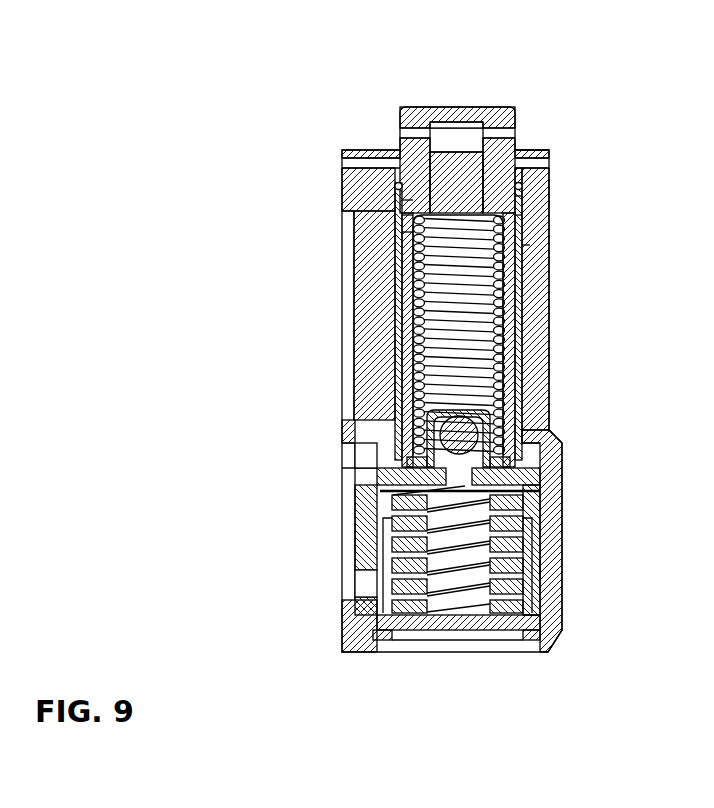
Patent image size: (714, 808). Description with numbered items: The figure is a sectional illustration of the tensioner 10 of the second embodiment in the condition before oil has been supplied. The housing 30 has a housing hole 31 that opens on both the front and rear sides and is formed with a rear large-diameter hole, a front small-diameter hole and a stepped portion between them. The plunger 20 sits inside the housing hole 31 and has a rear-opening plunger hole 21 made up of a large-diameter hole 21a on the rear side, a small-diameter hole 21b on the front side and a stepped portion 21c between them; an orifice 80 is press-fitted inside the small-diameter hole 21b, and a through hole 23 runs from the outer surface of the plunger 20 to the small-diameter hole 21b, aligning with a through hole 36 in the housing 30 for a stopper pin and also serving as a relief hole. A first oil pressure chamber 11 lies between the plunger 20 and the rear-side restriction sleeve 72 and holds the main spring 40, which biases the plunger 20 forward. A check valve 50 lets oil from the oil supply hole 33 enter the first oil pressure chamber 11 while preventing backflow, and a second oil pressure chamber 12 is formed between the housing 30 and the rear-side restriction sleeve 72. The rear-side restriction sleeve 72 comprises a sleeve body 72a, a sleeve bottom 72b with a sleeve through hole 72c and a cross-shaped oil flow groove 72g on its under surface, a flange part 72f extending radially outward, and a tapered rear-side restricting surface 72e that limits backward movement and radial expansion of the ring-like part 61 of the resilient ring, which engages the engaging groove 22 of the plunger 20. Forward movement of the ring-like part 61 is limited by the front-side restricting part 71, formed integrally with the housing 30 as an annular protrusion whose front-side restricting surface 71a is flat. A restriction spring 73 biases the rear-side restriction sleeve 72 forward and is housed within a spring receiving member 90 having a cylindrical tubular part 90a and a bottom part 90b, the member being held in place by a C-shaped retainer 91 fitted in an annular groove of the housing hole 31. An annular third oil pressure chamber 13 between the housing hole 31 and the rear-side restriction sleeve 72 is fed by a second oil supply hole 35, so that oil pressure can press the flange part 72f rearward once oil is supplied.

The tensioner 10 is at (236, 93).
The first oil pressure chamber 11 is at (467, 332).
The second oil pressure chamber 12 is at (467, 560).
The third oil pressure chamber 13 is at (430, 420).
The plunger 20 is at (405, 112).
The plunger hole 21 is at (270, 193).
The large-diameter hole 21a is at (402, 232).
The small-diameter hole 21b is at (402, 200).
The stepped portion 21c is at (402, 215).
The engaging groove 22 is at (524, 246).
The through hole 23 is at (410, 135).
The housing 30 is at (545, 290).
The housing hole 31 is at (533, 428).
The oil supply hole 33 is at (365, 583).
The second oil supply hole 35 is at (367, 463).
The through hole 36 is at (362, 163).
The main spring 40 is at (510, 335).
The check valve 50 is at (563, 446).
The ring-like part 61 is at (523, 186).
The front-side restricting part 71 is at (519, 192).
The front-side restricting surface 71a is at (528, 160).
The rear-side restriction sleeve 72 is at (398, 340).
The sleeve body 72a is at (520, 215).
The sleeve bottom 72b is at (385, 520).
The sleeve through hole 72c is at (535, 491).
The rear-side restricting surface 72e is at (519, 196).
The flange part 72f is at (342, 468).
The oil flow groove 72g is at (395, 495).
The restriction spring 73 is at (343, 640).
The orifice 80 is at (457, 165).
The spring receiving member 90 is at (538, 556).
The tubular part 90a is at (528, 570).
The bottom part 90b is at (500, 614).
The retainer 91 is at (545, 641).